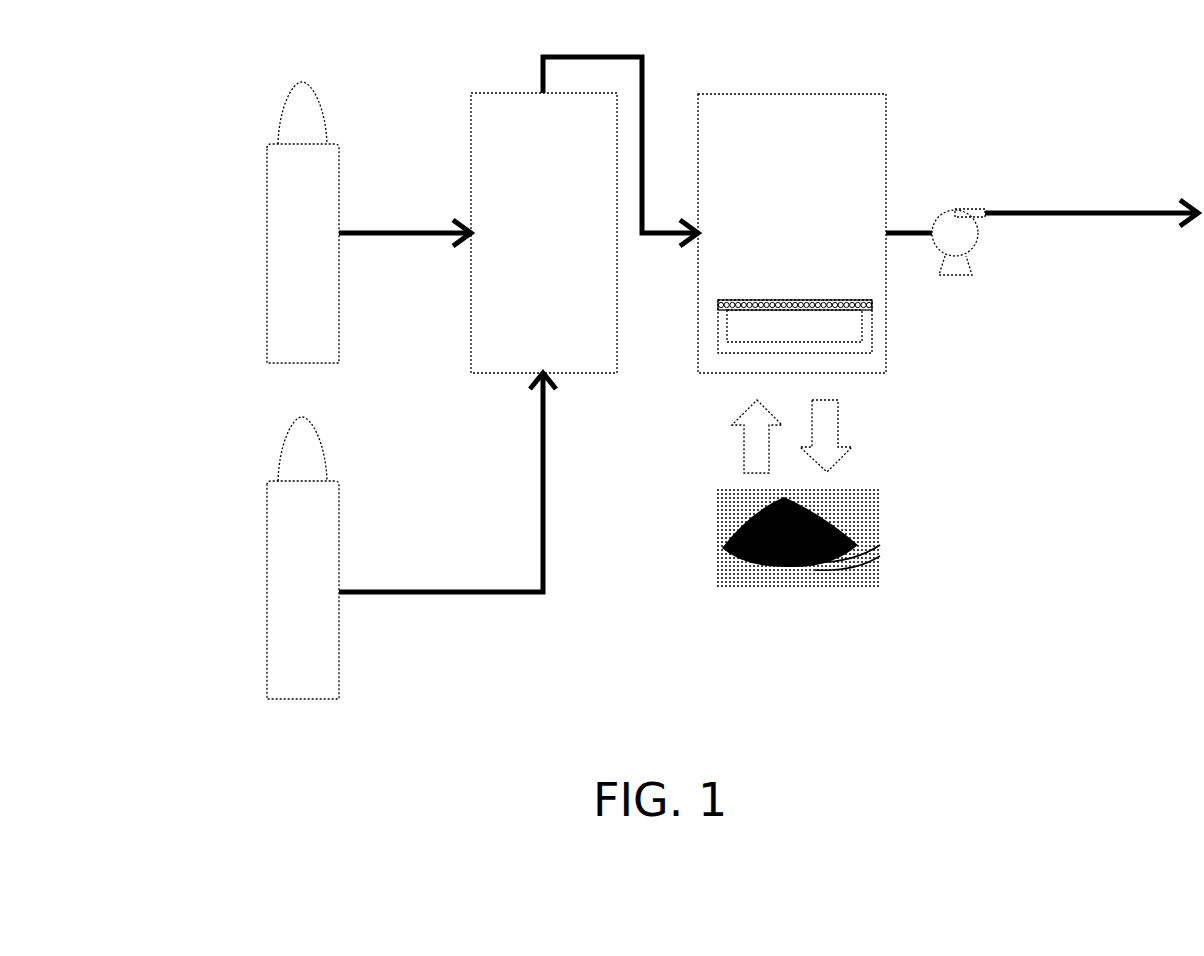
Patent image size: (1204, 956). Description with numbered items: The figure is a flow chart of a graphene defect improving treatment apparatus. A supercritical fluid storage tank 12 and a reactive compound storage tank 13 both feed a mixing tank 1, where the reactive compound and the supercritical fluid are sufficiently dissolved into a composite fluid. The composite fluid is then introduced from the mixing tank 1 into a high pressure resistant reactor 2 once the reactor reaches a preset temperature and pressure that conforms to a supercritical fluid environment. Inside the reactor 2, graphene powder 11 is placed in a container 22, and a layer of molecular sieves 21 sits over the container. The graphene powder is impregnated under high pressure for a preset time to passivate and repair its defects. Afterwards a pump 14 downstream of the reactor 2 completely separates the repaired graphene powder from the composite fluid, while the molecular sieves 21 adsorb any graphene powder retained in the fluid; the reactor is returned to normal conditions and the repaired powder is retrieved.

The mixing tank 1 is at (535, 131).
The reactor 2 is at (786, 132).
The graphene powder 11 is at (748, 515).
The supercritical fluid storage tank 12 is at (298, 100).
The reactive compound storage tank 13 is at (292, 446).
The pump 14 is at (955, 210).
The molecular sieves 21 is at (873, 303).
The container 22 is at (725, 347).